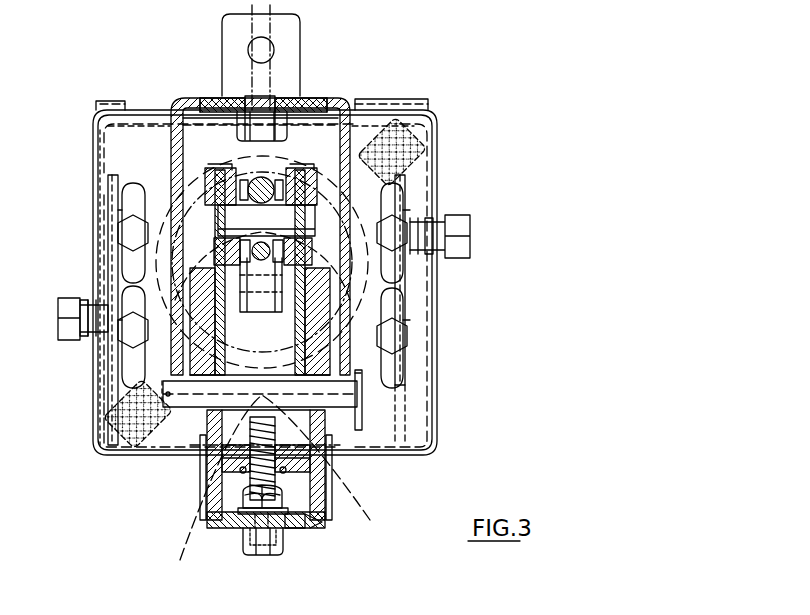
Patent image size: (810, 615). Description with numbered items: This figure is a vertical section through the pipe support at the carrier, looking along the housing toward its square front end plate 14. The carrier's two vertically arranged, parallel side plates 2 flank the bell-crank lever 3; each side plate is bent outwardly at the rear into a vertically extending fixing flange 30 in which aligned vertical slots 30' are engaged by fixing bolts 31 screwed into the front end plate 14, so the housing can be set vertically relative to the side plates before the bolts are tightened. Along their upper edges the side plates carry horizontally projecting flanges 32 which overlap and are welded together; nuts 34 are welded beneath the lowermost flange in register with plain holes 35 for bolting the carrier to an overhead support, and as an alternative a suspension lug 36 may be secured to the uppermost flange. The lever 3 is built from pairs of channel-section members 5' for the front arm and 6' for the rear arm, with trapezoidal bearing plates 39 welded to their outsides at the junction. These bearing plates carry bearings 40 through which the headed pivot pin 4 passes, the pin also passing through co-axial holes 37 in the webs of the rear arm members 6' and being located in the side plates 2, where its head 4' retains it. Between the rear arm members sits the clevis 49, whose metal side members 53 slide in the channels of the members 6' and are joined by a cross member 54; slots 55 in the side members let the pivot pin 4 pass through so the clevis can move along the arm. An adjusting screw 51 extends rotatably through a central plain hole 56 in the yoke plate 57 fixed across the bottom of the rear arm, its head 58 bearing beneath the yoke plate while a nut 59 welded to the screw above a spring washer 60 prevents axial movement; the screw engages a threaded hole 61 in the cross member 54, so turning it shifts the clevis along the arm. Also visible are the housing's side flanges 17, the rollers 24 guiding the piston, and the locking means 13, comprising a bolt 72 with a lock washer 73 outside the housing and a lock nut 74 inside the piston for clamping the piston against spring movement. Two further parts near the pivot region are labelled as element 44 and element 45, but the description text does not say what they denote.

The side plates 2 is at (183, 165).
The bell-crank lever 3 is at (250, 470).
The pivot pin 4 is at (286, 287).
The head of pivot pin 4' is at (388, 440).
The channel-section members of front arm 5' is at (277, 92).
The channel-section members of rear arm 6' is at (280, 489).
The locking means 13 is at (110, 360).
The front end plate 14 is at (430, 385).
The side flanges 17 is at (150, 447).
The rollers 24 is at (420, 135).
The fixing flange 30 is at (263, 299).
The slots 30' is at (262, 313).
The fixing bolts 31 is at (128, 230).
The flanges 32 is at (300, 110).
The nuts 34 is at (228, 108).
The plain holes 35 is at (237, 128).
The suspension lug 36 is at (300, 42).
The co-axial holes 37 is at (274, 318).
The bearing plates 39 is at (190, 282).
The bearings 40 is at (235, 460).
The upper bearing block 44 is at (208, 178).
The nut 45 is at (222, 173).
The clevis 49 is at (330, 470).
The adjusting screw 51 is at (252, 520).
The side members 53 is at (276, 310).
The cross member 54 is at (212, 480).
The slots 55 is at (215, 395).
The central plain hole 56 is at (315, 525).
The yoke plate 57 is at (300, 520).
The head of adjusting screw 58 is at (282, 505).
The nut 59 is at (258, 540).
The spring washer 60 is at (306, 520).
The threaded hole 61 is at (228, 505).
The bolt 72 is at (60, 318).
The lock washer 73 is at (85, 305).
The lock nut 74 is at (98, 340).